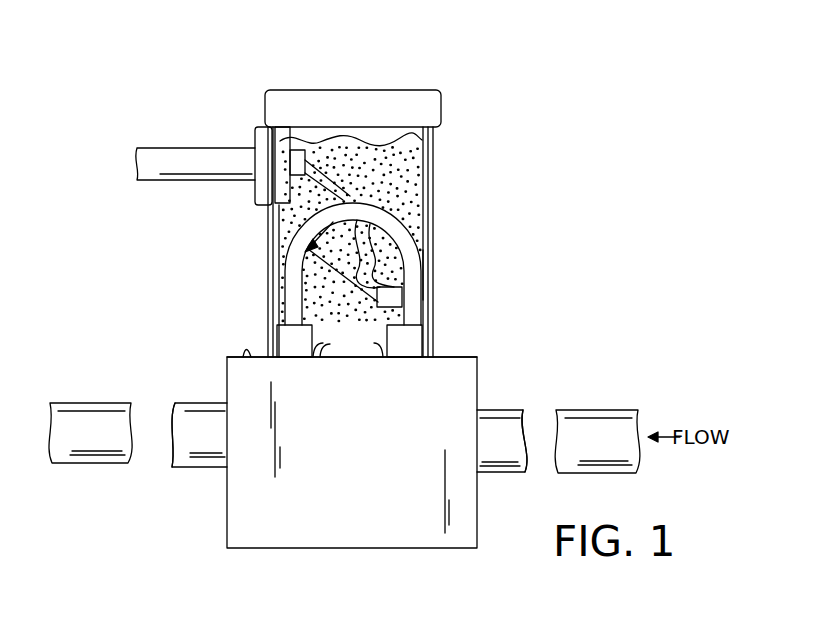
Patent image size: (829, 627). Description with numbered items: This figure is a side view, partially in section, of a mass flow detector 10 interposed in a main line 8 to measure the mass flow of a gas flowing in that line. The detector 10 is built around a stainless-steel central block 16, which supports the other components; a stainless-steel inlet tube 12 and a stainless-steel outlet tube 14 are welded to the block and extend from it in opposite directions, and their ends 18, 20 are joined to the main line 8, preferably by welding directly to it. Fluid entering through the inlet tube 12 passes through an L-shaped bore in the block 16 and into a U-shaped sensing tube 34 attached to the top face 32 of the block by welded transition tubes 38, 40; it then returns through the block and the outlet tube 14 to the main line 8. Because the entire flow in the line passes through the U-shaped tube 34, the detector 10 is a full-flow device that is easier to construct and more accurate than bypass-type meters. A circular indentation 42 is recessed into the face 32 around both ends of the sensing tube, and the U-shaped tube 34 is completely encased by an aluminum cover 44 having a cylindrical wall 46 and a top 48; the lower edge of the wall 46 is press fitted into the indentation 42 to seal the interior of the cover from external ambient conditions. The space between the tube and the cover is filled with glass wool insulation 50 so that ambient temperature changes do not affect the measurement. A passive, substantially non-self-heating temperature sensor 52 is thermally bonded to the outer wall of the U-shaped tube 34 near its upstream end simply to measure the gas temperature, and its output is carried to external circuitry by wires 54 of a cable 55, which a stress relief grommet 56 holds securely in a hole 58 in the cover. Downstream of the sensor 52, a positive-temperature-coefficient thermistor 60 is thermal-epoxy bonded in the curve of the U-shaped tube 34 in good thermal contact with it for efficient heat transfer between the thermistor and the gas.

The main line 8 is at (97, 464).
The mass flow detector 10 is at (526, 300).
The inlet tube 12 is at (500, 473).
The outlet tube 14 is at (190, 468).
The central block 16 is at (227, 518).
The end of inlet tube 18 is at (528, 420).
The end of outlet tube 20 is at (170, 407).
The top face 32 is at (252, 355).
The U-shaped sensing tube 34 is at (435, 190).
The transition tube 38 is at (388, 357).
The transition tube 40 is at (313, 357).
The circular indentation 42 is at (433, 330).
The aluminum cover 44 is at (473, 145).
The cylindrical wall 46 is at (432, 277).
The top 48 is at (421, 88).
The glass wool insulation 50 is at (415, 160).
The passive temperature sensor 52 is at (404, 278).
The wires 54 is at (290, 224).
The cable 55 is at (193, 150).
The stress relief grommet 56 is at (248, 134).
The hole 58 is at (258, 126).
The PTC thermistor 60 is at (330, 266).